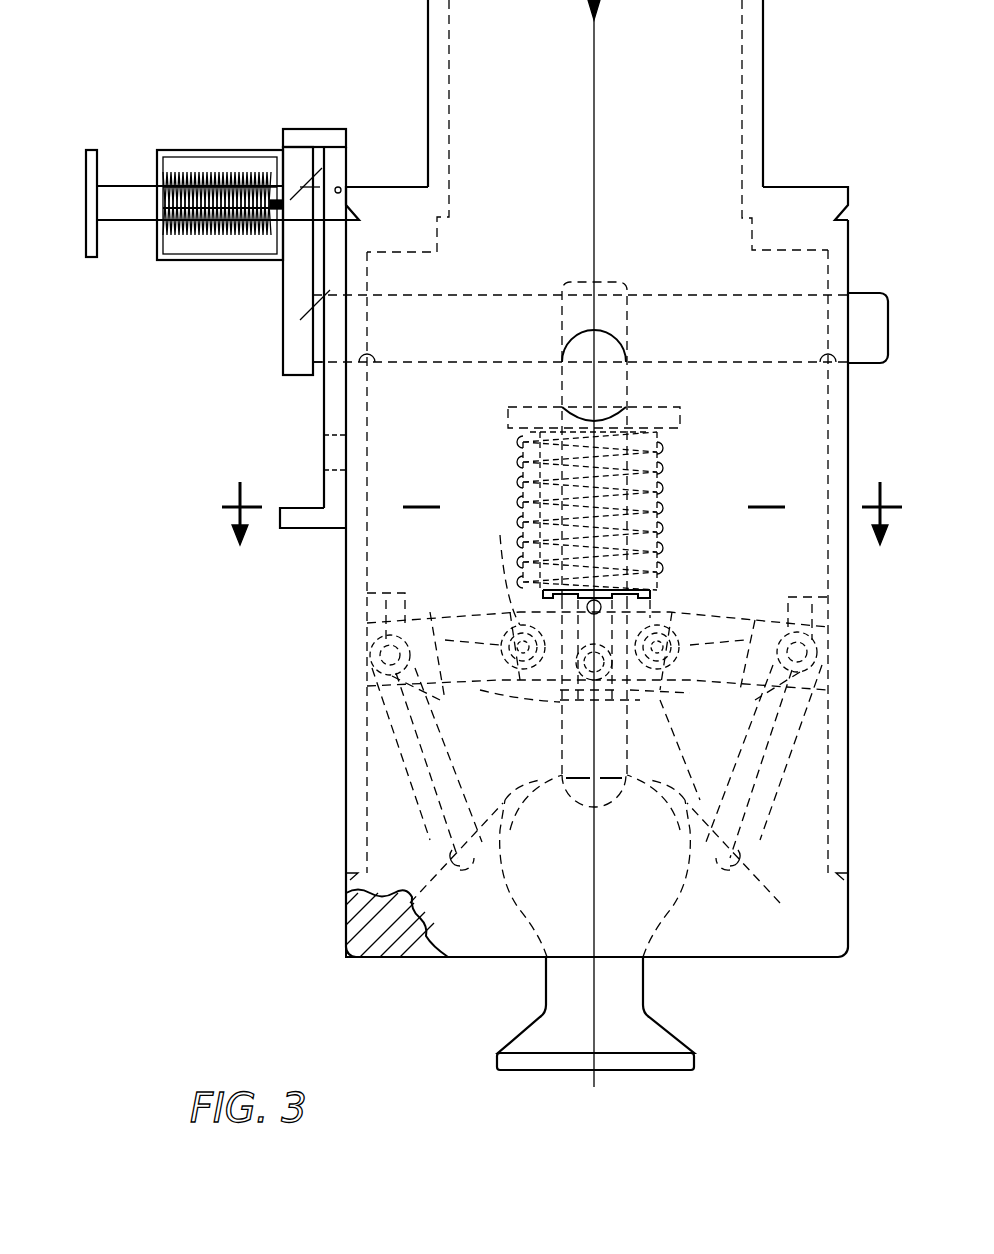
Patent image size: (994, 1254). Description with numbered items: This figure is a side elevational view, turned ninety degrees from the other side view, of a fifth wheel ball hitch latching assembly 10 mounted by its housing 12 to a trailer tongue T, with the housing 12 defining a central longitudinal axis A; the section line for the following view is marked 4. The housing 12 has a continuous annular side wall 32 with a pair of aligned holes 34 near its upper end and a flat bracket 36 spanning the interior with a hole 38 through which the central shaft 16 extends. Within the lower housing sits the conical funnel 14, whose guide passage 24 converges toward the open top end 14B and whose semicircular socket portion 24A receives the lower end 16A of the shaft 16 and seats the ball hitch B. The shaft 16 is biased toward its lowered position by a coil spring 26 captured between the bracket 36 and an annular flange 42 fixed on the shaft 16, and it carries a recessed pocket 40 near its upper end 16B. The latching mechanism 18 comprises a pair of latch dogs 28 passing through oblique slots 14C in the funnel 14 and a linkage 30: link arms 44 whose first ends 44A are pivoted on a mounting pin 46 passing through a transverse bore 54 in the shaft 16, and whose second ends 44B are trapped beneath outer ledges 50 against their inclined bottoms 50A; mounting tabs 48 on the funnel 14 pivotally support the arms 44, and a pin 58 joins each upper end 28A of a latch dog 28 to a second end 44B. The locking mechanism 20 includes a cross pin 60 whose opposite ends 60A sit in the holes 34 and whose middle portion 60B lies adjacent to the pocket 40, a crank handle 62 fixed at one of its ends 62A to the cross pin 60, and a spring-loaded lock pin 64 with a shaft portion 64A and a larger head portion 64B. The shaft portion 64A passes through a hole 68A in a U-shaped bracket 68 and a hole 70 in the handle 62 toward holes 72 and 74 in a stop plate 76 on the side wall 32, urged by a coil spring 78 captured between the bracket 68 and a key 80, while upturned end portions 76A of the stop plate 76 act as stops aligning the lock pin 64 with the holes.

The fifth wheel ball hitch latching assembly 10 is at (280, 44).
The housing 12 is at (330, 604).
The funnel 14 is at (348, 937).
The open top end 14B is at (562, 710).
The slots 14C is at (448, 855).
The central shaft 16 is at (660, 464).
The lower end 16A is at (595, 805).
The upper end 16B is at (622, 282).
The latching mechanism 18 is at (702, 574).
The locking mechanism 20 is at (226, 410).
The guide passage 24 is at (401, 934).
The socket portion 24A is at (700, 730).
The coil spring 26 is at (520, 490).
The latch dogs 28 is at (597, 784).
The upper end 28A is at (380, 705).
The linkage 30 is at (486, 594).
The annular side wall 32 is at (849, 562).
The holes 34 is at (370, 366).
The bracket 36 is at (680, 408).
The hole 38 is at (555, 418).
The recessed pocket 40 is at (612, 379).
The annular flange 42 is at (652, 590).
The link arms 44 is at (440, 612).
The first end 44A is at (625, 782).
The second end 44B is at (372, 665).
The mounting pin 46 is at (592, 680).
The mounting tabs 48 is at (596, 647).
The outer ledges 50 is at (367, 620).
The inclined bottom 50A is at (388, 593).
The transverse bore 54 is at (640, 712).
The pin 58 is at (382, 684).
The cross pin 60 is at (470, 293).
The opposite ends 60A is at (870, 293).
The middle portion 60B is at (648, 293).
The crank handle 62 is at (282, 320).
The opposite ends 62A is at (300, 160).
The spring-loaded lock pin 64 is at (134, 165).
The shaft portion 64A is at (130, 220).
The head portion 64B is at (85, 240).
The U-shaped bracket 68 is at (184, 150).
The hole 68A is at (158, 210).
The hole 70 is at (318, 186).
The hole 72 is at (346, 186).
The hole 74 is at (334, 438).
The stop plate 76 is at (346, 330).
The end portions 76A is at (308, 128).
The coil spring 78 is at (225, 172).
The key 80 is at (274, 236).
The section line 4 is at (558, 511).
The central longitudinal axis A is at (596, 176).
The ball hitch B is at (688, 900).
The trailer tongue T is at (765, 70).